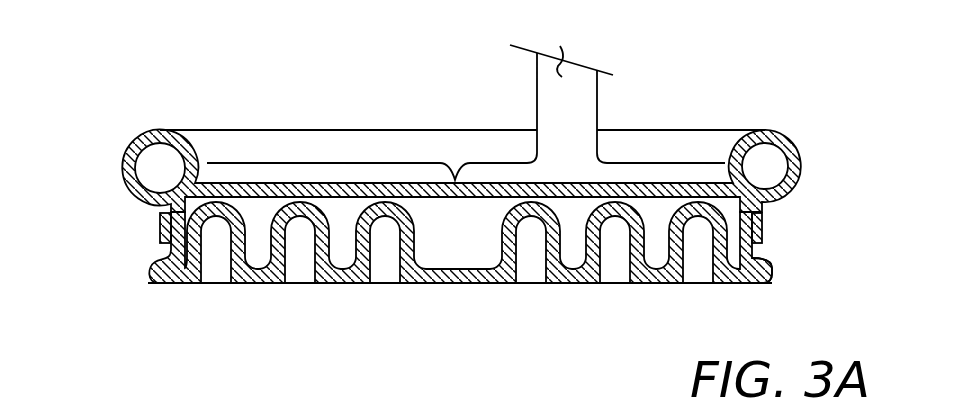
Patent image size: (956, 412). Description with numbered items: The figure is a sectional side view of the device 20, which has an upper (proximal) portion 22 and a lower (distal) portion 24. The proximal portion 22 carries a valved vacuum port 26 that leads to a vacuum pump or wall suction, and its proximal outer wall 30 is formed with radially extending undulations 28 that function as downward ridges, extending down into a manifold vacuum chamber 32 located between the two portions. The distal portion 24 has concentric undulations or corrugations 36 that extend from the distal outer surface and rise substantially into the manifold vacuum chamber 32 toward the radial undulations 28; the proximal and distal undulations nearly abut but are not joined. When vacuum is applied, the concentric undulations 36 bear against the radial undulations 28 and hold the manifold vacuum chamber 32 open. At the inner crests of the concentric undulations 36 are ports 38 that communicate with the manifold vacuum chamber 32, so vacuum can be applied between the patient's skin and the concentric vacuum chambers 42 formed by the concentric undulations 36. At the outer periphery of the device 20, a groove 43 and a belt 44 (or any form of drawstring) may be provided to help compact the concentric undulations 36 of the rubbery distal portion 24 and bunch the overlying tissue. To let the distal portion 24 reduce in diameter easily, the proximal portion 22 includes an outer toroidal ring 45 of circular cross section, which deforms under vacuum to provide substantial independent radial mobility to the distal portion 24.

The device 20 is at (347, 85).
The upper (proximal) portion 22 is at (641, 115).
The lower (distal) portion 24 is at (743, 296).
The valved vacuum port 26 is at (536, 85).
The radially extending undulations 28 is at (455, 178).
The proximal outer wall 30 is at (318, 162).
The manifold vacuum chamber 32 is at (463, 242).
The concentric undulations 36 is at (265, 283).
The ports 38 is at (386, 218).
The concentric vacuum chambers 42 is at (531, 265).
The groove 43 is at (763, 242).
The belt 44 is at (763, 228).
The outer toroidal ring 45 is at (140, 137).